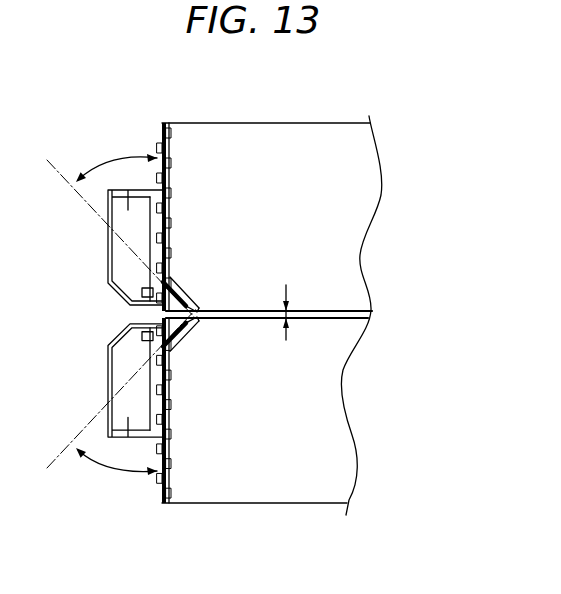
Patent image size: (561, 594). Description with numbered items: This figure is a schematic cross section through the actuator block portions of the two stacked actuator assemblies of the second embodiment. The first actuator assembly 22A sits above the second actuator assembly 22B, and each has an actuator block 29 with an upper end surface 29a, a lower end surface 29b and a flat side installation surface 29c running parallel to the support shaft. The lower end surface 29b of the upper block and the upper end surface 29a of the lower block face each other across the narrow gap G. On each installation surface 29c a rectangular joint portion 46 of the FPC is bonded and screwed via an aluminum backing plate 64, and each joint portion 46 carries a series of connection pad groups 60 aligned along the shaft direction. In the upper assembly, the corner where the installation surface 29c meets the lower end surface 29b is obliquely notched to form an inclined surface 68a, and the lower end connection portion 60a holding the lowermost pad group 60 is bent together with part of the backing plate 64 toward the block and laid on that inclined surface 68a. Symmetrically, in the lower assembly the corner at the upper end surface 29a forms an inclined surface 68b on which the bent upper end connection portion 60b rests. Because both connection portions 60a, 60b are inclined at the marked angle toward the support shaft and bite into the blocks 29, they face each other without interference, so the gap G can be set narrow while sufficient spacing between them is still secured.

The actuator block 29 is at (357, 166).
The upper end surface 29a is at (289, 123).
The lower end surface 29b is at (360, 322).
The installation surface 29c is at (160, 158).
The backing plate 64 is at (168, 188).
The connection pad group 60 is at (160, 226).
The joint portion 46 is at (152, 240).
The lower end connection portion 60a is at (182, 292).
The upper end connection portion 60b is at (182, 338).
The inclined surface 68a is at (193, 313).
The inclined surface 68b is at (193, 319).
The gap G is at (296, 317).
The first actuator assembly 22A is at (400, 218).
The second actuator assembly 22B is at (398, 404).